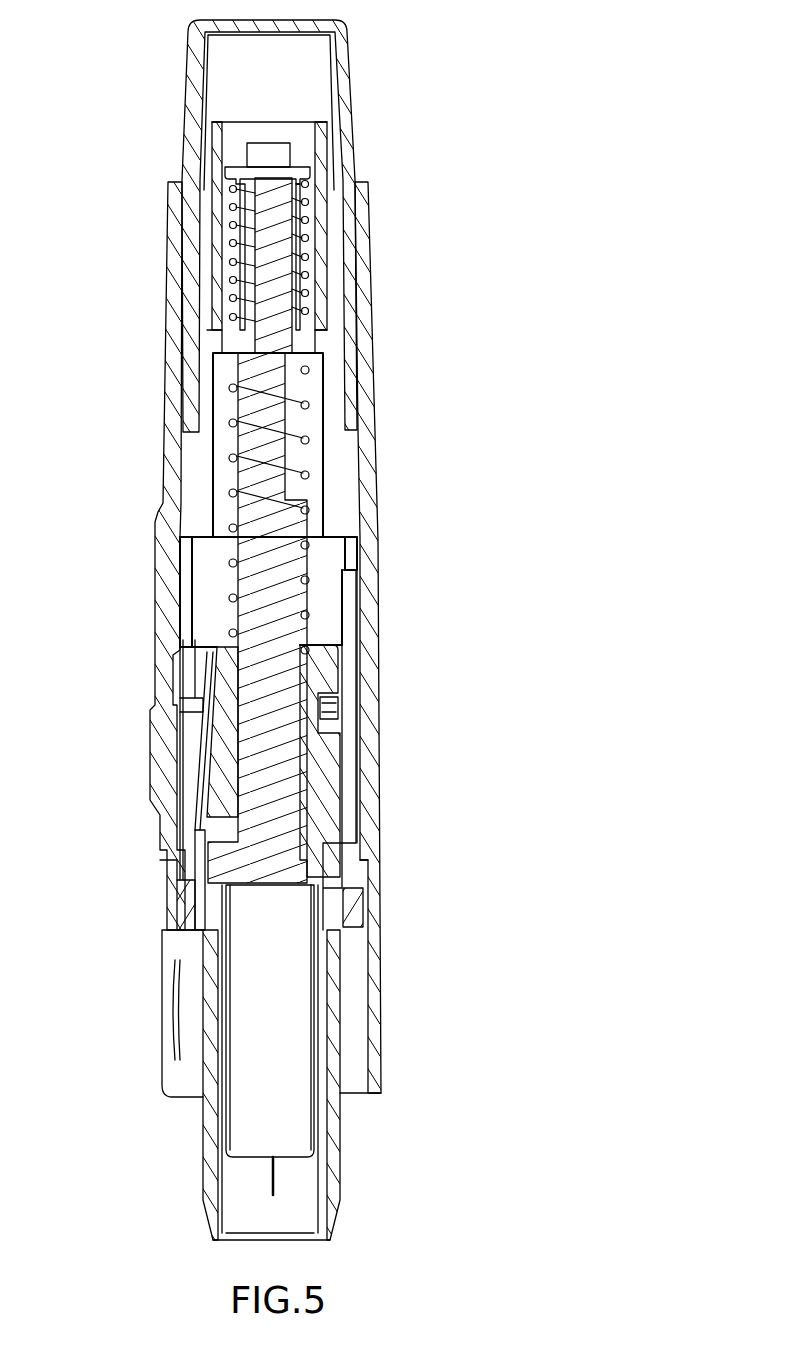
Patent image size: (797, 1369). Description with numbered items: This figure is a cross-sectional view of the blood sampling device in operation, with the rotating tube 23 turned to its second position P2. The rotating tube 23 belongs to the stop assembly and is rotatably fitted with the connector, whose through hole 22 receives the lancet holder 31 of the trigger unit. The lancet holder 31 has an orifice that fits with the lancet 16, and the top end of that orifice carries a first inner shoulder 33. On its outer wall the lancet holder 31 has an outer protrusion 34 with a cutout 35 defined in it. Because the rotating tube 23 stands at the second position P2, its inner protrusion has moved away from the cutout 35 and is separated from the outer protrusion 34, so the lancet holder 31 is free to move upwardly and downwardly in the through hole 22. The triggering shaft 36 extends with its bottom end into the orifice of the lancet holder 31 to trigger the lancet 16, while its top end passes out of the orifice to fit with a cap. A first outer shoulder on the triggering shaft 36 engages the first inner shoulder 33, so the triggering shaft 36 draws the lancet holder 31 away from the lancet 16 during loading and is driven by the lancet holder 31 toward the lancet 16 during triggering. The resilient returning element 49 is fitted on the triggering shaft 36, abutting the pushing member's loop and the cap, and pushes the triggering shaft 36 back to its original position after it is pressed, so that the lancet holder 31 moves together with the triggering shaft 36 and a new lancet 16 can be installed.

The resilient returning element 49 is at (300, 230).
The rotating tube 23 is at (350, 547).
The second position P2 is at (382, 600).
The first inner shoulder 33 is at (238, 683).
The triggering shaft 36 is at (260, 782).
The cutout 35 is at (345, 752).
The outer protrusion 34 is at (325, 798).
The through hole 22 is at (187, 905).
The lancet holder 31 is at (317, 872).
The lancet 16 is at (288, 1049).